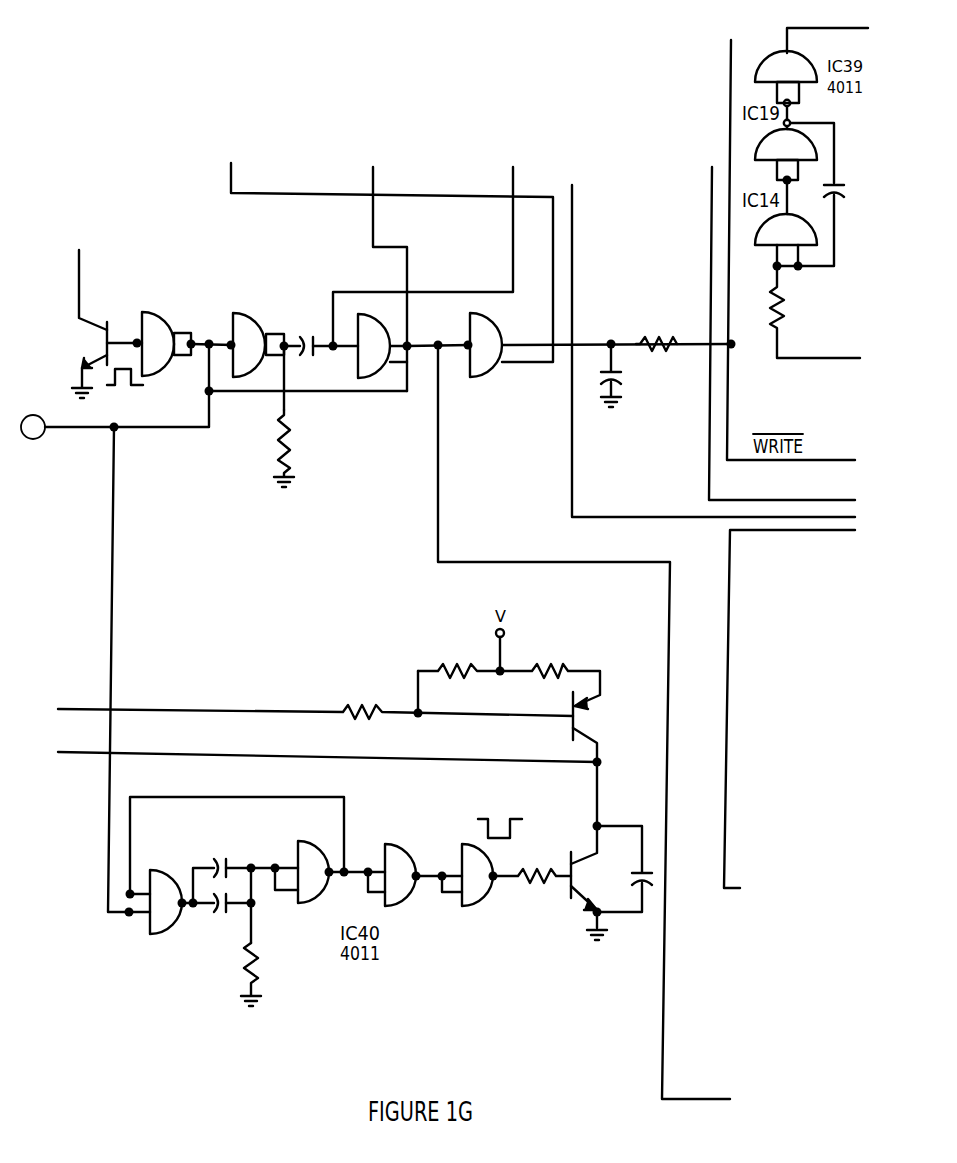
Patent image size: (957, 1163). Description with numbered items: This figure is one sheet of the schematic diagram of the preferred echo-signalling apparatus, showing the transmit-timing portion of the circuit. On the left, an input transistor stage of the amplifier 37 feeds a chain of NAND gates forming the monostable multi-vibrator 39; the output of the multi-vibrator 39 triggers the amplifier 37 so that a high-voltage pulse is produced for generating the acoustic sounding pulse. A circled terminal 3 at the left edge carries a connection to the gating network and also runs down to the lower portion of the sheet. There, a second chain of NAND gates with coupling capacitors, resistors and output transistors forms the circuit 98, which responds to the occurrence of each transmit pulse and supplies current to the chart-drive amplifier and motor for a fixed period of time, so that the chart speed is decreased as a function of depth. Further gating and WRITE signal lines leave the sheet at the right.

The amplifier 37 is at (82, 312).
The monostable multi-vibrator 39 is at (229, 322).
The circuit 98 is at (441, 836).
The terminal 3 is at (115, 415).